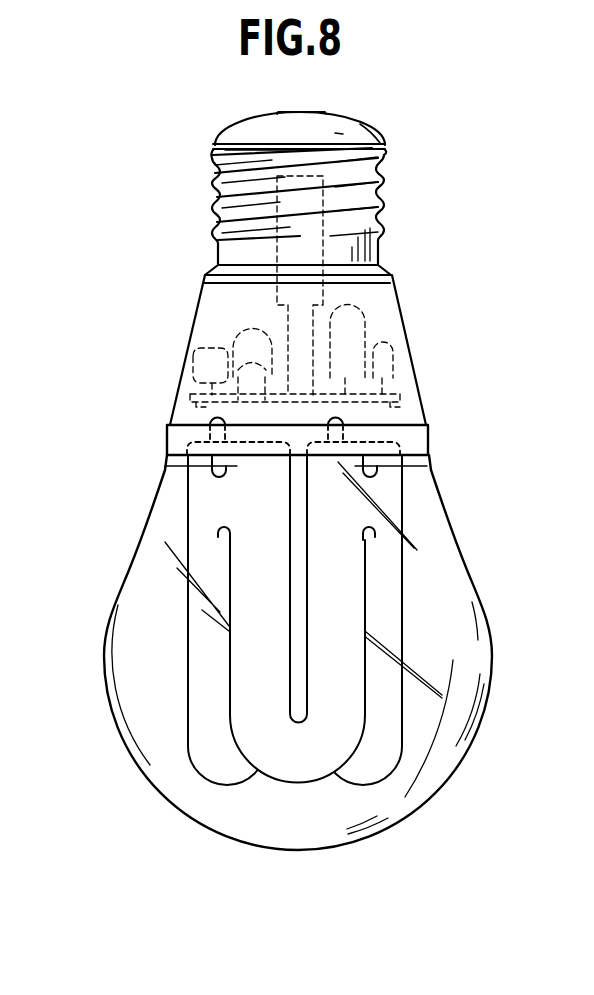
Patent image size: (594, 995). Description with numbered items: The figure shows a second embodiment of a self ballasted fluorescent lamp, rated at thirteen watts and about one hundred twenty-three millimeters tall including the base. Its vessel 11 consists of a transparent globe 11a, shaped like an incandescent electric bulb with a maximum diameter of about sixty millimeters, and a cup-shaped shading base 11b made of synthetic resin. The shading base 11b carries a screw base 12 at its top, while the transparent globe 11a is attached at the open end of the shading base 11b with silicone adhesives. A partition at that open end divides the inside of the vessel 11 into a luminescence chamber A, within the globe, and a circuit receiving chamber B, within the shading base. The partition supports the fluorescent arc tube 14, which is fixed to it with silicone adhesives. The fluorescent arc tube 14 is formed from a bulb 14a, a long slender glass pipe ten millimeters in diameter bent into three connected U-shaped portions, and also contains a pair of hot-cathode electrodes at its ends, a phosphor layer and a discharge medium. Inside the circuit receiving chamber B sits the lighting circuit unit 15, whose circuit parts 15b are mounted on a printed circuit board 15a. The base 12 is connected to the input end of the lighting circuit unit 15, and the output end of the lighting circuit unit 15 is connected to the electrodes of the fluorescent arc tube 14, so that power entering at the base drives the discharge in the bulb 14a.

The vessel 11 is at (357, 365).
The transparent globe 11a is at (486, 695).
The shading base 11b is at (410, 353).
The base 12 is at (380, 141).
The fluorescent arc tube 14 is at (313, 648).
The bulb 14a is at (213, 728).
The lighting circuit unit 15 is at (293, 305).
The printed circuit board 15a is at (183, 391).
The circuit parts 15b is at (232, 337).
The luminescence chamber A is at (148, 689).
The circuit receiving chamber B is at (228, 320).